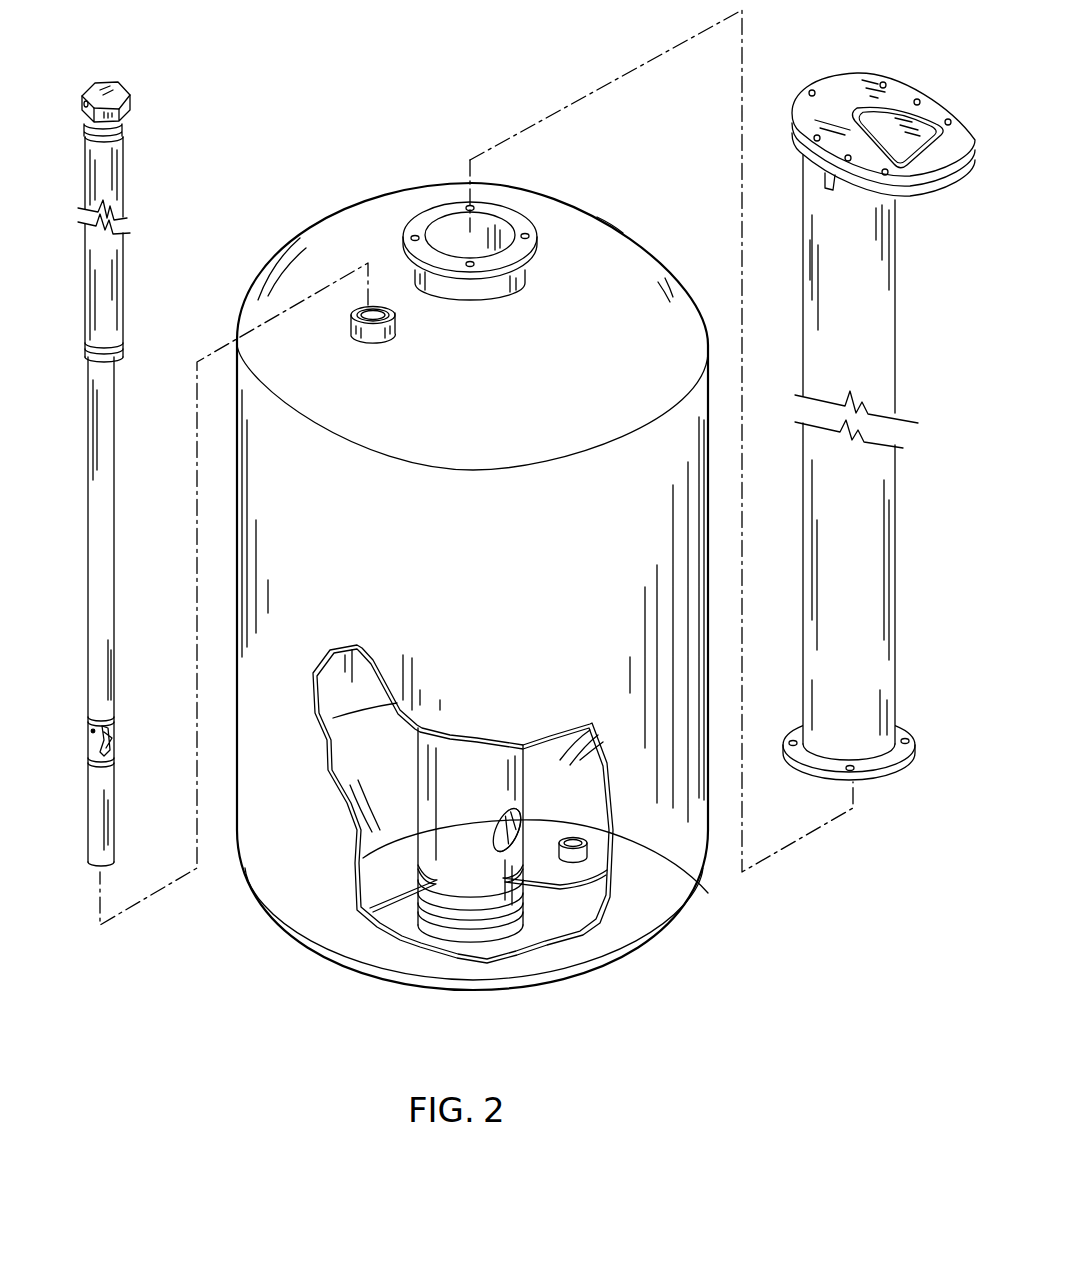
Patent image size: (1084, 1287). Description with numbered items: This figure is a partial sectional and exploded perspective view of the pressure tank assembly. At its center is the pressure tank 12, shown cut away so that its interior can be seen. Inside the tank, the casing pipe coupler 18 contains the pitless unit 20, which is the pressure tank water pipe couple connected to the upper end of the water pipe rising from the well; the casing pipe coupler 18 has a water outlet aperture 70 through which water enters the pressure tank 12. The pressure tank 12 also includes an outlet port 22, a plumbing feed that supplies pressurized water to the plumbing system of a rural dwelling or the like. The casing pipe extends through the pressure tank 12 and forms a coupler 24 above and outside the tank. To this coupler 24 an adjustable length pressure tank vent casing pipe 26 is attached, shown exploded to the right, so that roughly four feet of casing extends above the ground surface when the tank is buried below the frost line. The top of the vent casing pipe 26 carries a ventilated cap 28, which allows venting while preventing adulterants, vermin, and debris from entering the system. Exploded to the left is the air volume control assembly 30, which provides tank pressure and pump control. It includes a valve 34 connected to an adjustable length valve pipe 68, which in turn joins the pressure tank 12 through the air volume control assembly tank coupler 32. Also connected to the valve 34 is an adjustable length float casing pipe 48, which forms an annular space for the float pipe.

The pressure tank 12 is at (268, 832).
The casing pipe coupler 18 is at (520, 923).
The pitless unit 20 is at (610, 877).
The outlet port 22 is at (587, 853).
The coupler 24 is at (527, 263).
The pressure tank vent casing pipe 26 is at (872, 577).
The ventilated cap 28 is at (847, 92).
The air volume control assembly 30 is at (180, 258).
The air volume control assembly tank coupler 32 is at (393, 305).
The valve 34 is at (125, 85).
The float casing pipe 48 is at (110, 472).
The valve pipe 68 is at (118, 183).
The water outlet aperture 70 is at (417, 842).